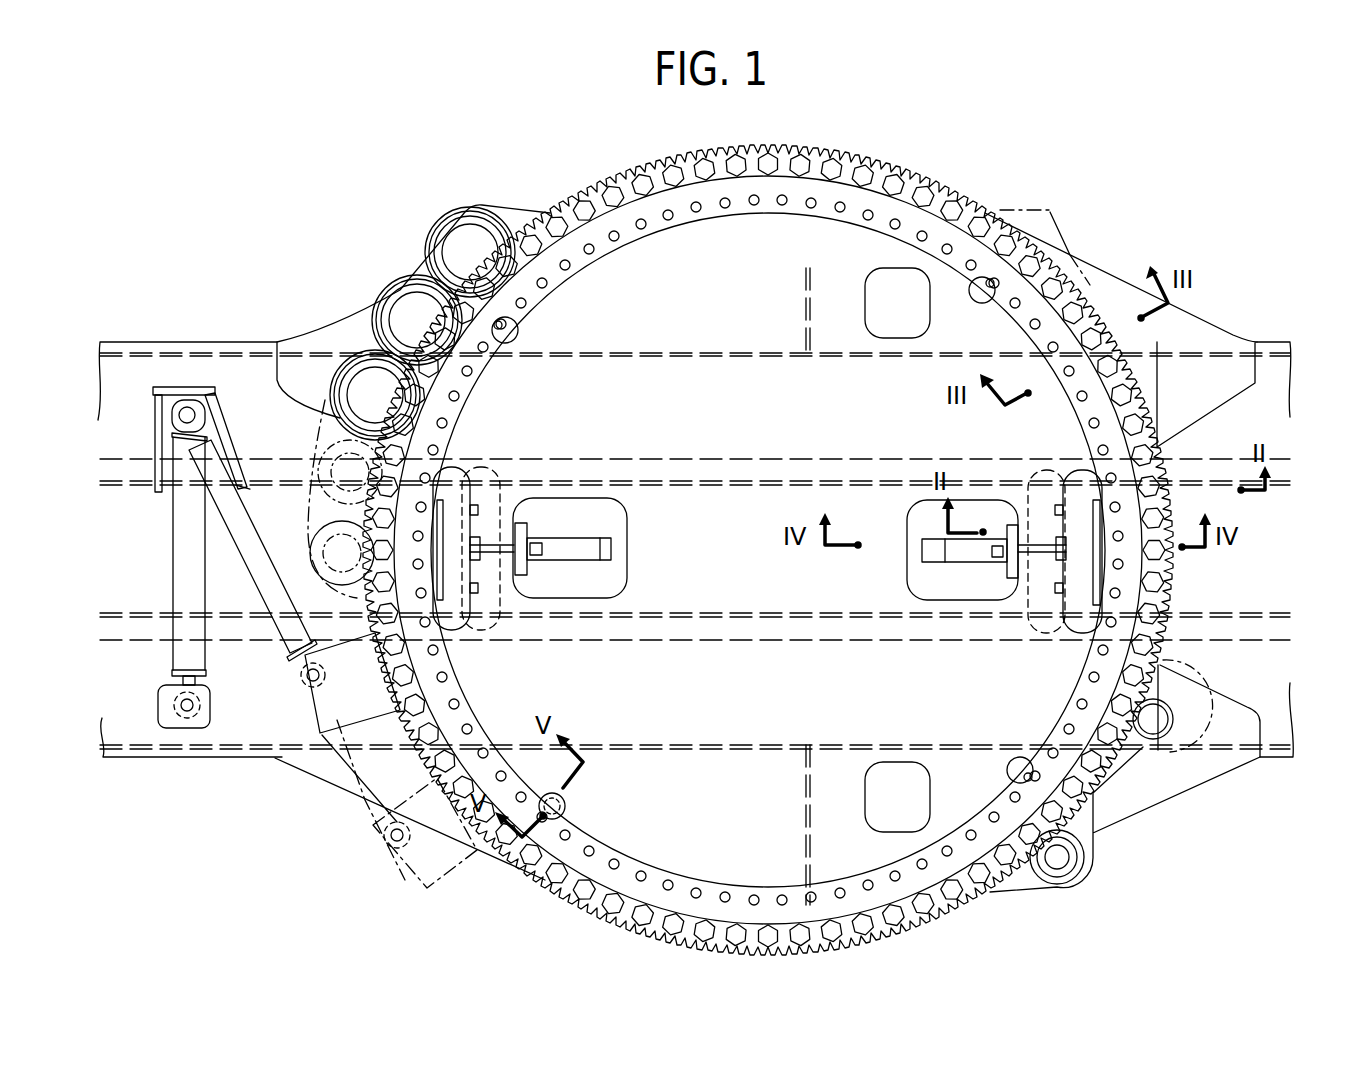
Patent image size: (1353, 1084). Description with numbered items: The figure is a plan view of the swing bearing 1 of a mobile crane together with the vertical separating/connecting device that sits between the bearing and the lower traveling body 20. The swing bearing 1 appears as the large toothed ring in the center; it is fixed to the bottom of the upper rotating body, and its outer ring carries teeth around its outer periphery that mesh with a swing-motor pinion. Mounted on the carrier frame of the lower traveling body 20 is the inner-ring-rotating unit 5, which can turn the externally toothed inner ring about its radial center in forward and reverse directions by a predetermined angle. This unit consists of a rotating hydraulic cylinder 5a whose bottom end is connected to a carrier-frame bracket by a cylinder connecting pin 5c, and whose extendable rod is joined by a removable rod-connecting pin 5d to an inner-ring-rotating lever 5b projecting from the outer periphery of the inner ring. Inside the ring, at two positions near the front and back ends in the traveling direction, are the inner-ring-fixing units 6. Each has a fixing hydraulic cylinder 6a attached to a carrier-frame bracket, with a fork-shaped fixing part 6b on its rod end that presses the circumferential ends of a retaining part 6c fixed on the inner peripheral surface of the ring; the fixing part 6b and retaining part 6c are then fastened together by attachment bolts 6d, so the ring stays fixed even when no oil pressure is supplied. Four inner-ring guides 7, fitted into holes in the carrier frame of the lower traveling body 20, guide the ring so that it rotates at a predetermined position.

The swing bearing 1 is at (1062, 302).
The lower traveling body 20 is at (1143, 812).
The inner-ring-rotating unit 5 is at (262, 567).
The rotating hydraulic cylinder 5a is at (245, 578).
The inner-ring-rotating lever 5b is at (405, 712).
The cylinder connecting pin 5c is at (188, 407).
The rod-connecting pin 5d is at (312, 682).
The inner-ring-fixing unit 6 is at (767, 534).
The fixing hydraulic cylinder 6a is at (585, 538).
The fork-shaped fixing part 6b is at (478, 512).
The retaining part 6c is at (445, 605).
The attachment bolt 6d is at (480, 505).
The inner-ring guide 7 is at (592, 814).